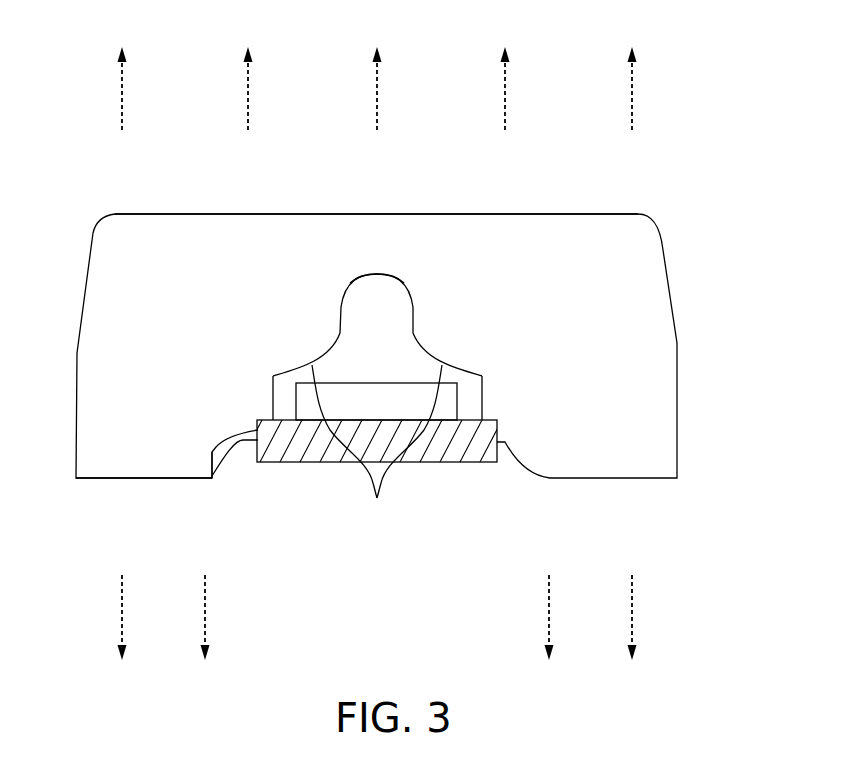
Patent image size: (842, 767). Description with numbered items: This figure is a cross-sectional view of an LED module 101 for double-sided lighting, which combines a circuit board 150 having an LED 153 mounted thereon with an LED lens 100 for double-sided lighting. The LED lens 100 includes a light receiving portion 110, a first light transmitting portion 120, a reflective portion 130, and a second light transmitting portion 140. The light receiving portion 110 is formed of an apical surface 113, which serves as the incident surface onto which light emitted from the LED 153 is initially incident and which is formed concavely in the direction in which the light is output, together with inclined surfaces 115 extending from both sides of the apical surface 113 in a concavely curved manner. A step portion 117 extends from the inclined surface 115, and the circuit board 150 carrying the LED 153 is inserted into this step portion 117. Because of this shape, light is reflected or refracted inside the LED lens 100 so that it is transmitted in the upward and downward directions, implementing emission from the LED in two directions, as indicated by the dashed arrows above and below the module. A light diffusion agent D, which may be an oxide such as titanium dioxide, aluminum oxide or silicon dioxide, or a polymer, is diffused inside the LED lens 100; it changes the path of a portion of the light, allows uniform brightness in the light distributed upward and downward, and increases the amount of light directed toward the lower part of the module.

The LED lens for double-sided lighting 100 is at (415, 347).
The LED module for double-sided lighting 101 is at (631, 194).
The light receiving portion 110 is at (332, 296).
The apical surface 113 is at (386, 273).
The inclined surfaces 115 is at (377, 446).
The step portion 117 is at (212, 478).
The first light transmitting portion 120 is at (348, 213).
The reflective portion 130 is at (678, 382).
The second light transmitting portion 140 is at (125, 479).
The circuit board 150 is at (308, 463).
The LED 153 is at (448, 412).
The light diffusion agent D is at (608, 333).